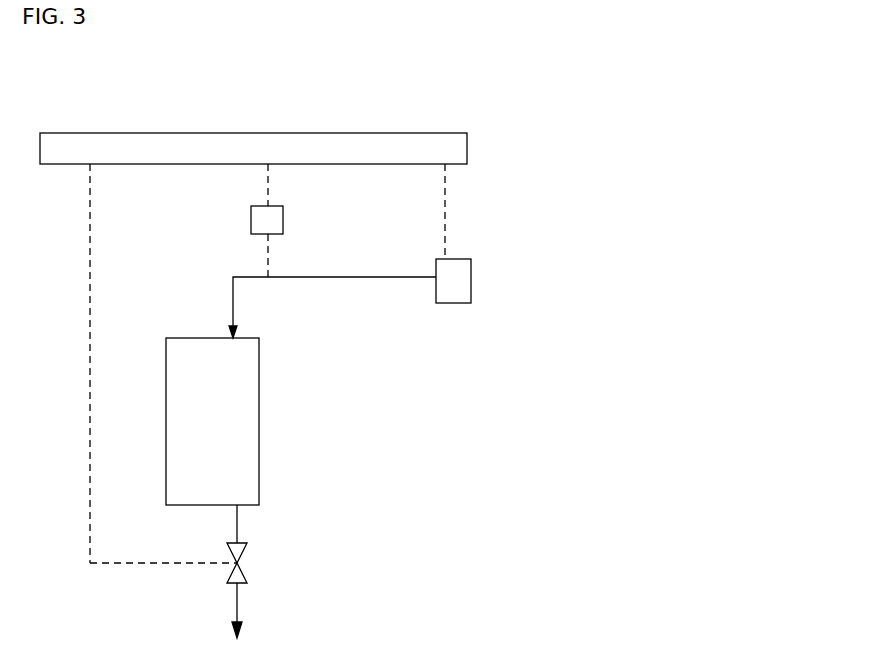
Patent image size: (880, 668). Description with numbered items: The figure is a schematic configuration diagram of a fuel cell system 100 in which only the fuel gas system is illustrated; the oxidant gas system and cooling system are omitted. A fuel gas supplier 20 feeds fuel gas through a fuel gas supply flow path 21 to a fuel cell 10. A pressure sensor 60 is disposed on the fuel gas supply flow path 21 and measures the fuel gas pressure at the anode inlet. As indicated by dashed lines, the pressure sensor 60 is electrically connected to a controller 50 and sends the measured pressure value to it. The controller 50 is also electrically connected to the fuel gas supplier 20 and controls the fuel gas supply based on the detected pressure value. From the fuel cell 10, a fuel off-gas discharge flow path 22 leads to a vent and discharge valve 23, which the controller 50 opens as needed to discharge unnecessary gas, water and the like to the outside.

The fuel cell system 100 is at (545, 82).
The controller 50 is at (467, 148).
The pressure sensor 60 is at (283, 210).
The fuel gas supplier 20 is at (464, 303).
The fuel gas supply flow path 21 is at (373, 277).
The fuel cell 10 is at (166, 412).
The fuel off-gas discharge flow path 22 is at (233, 513).
The vent and discharge valve 23 is at (243, 548).